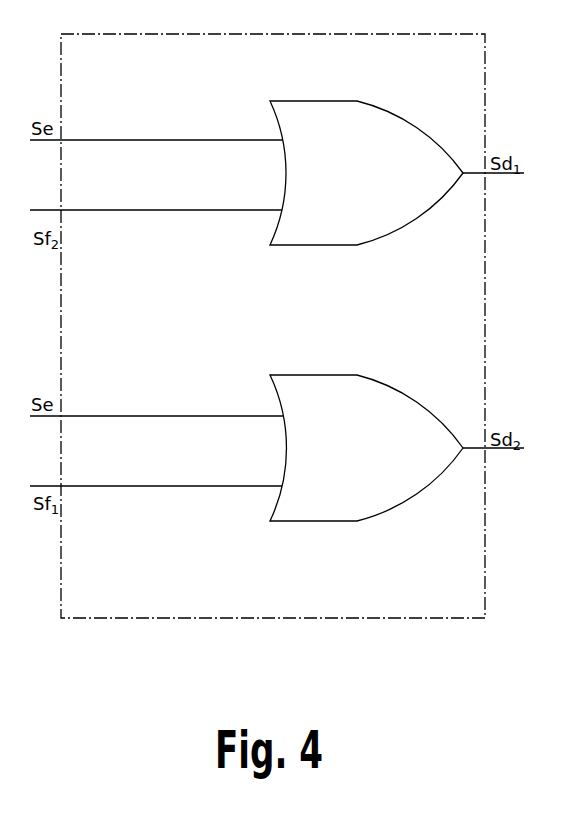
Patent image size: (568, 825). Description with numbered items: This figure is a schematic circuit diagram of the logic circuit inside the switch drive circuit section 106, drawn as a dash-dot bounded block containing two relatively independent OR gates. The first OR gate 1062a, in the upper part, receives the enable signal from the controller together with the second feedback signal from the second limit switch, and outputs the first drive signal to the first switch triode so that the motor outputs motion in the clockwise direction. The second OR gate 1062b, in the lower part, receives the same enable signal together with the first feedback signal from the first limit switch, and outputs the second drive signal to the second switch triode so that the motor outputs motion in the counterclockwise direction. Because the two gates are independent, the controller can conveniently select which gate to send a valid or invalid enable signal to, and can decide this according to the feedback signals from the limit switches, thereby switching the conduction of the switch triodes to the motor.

The switch drive circuit section 106 is at (452, 76).
The first OR gate 1062a is at (355, 245).
The second OR gate 1062b is at (355, 521).